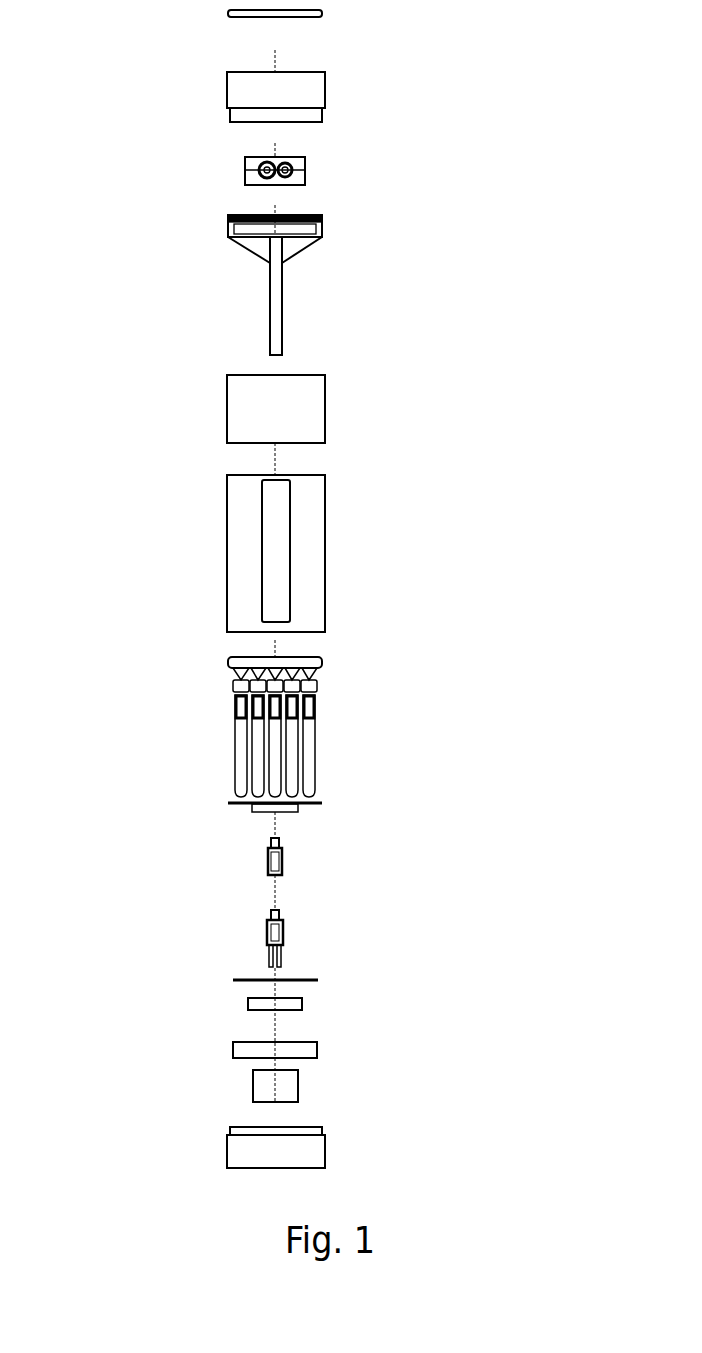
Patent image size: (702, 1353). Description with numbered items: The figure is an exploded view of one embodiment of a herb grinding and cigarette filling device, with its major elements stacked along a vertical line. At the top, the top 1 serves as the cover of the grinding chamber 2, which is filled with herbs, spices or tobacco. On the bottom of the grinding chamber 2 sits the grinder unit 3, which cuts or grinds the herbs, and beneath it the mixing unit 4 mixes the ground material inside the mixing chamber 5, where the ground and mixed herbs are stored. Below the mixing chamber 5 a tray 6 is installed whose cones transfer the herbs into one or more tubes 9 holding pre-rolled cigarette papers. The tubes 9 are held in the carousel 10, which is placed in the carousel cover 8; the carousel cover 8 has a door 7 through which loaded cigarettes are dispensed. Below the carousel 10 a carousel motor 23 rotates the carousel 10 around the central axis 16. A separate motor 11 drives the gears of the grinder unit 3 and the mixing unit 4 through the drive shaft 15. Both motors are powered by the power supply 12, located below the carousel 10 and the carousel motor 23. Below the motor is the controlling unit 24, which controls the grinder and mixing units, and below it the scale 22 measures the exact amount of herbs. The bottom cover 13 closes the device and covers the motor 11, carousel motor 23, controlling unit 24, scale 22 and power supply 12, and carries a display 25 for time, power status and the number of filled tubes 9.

The top 1 is at (322, 13).
The grinding chamber 2 is at (325, 90).
The grinder unit 3 is at (305, 175).
The mixing unit 4 is at (312, 252).
The mixing chamber 5 is at (325, 407).
The tray 6 is at (322, 660).
The door 7 is at (300, 502).
The carousel cover 8 is at (376, 537).
The tube 9 is at (313, 733).
The carousel 10 is at (317, 736).
The motor 11 is at (283, 920).
The power supply 12 is at (318, 1052).
The bottom cover 13 is at (325, 1150).
The drive shaft 15 is at (272, 909).
The central axis 16 is at (278, 457).
The scale 22 is at (303, 1003).
The carousel motor 23 is at (283, 851).
The controlling unit 24 is at (385, 927).
The display 25 is at (300, 1088).